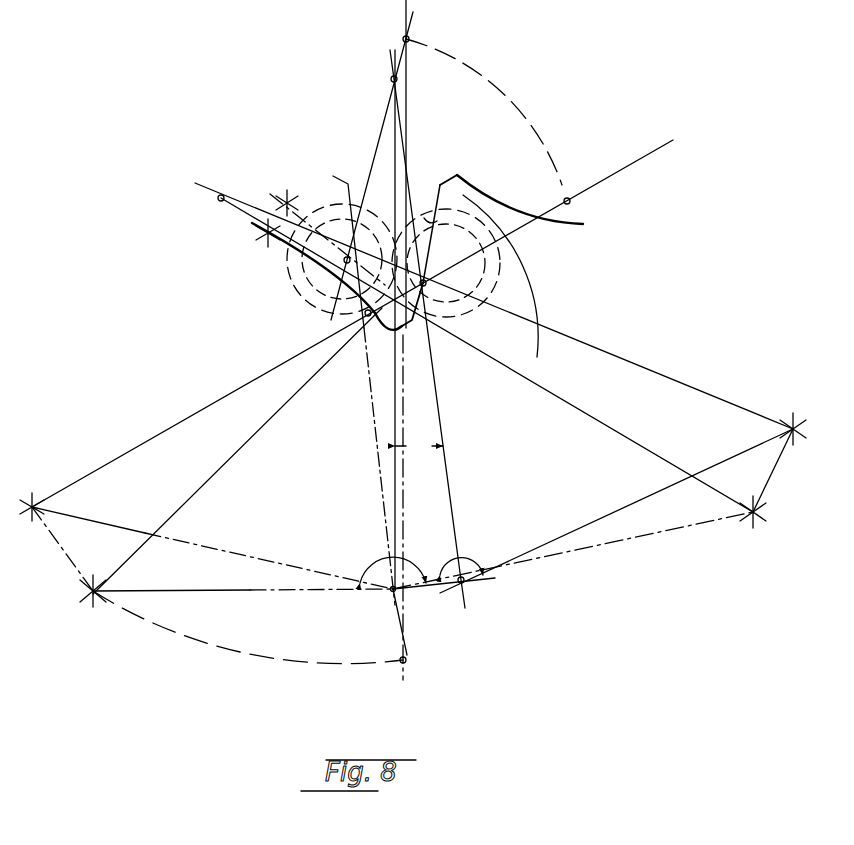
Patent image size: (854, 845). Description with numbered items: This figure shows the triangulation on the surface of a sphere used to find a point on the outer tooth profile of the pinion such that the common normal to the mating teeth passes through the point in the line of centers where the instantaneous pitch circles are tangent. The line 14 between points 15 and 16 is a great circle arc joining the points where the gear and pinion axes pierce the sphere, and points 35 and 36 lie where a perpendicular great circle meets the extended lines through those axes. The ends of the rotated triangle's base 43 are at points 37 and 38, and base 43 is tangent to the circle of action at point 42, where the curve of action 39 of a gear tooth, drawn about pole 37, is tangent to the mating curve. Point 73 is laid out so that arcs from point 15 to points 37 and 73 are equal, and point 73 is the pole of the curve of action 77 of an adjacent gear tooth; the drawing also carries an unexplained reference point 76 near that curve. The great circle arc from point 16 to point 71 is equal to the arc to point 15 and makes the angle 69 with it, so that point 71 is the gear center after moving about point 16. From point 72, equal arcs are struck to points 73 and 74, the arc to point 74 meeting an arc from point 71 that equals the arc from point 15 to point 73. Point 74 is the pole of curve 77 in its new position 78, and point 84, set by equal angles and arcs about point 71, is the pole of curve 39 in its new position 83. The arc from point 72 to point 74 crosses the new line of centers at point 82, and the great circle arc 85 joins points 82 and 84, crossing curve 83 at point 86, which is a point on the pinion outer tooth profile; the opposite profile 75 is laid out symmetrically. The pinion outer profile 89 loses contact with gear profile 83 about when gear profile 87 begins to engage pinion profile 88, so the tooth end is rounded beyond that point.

The line 14 is at (397, 505).
The point 15 is at (390, 592).
The point 16 is at (391, 79).
The point 35 is at (405, 659).
The point 36 is at (407, 40).
The point 37 is at (34, 504).
The point 38 is at (570, 202).
The arc of small circle 39 is at (319, 222).
The point of tangency 42 is at (366, 328).
The base 43 is at (140, 445).
The angle 69 is at (419, 447).
The point 71 is at (465, 580).
The point 72 is at (224, 198).
The point 73 is at (757, 512).
The point 74 is at (793, 427).
The opposite profile 75 is at (435, 217).
The roller center 76 is at (427, 284).
The curve of action 77 is at (455, 253).
The new position of curve of action 78 is at (446, 223).
The point 82 is at (432, 272).
The new position of curve of action 83 is at (312, 268).
The point 84 is at (90, 591).
The great circle arc 85 is at (240, 452).
The point 86 is at (400, 330).
The profile 87 is at (523, 256).
The profile 88 is at (576, 225).
The outer tooth profile 89 is at (350, 258).